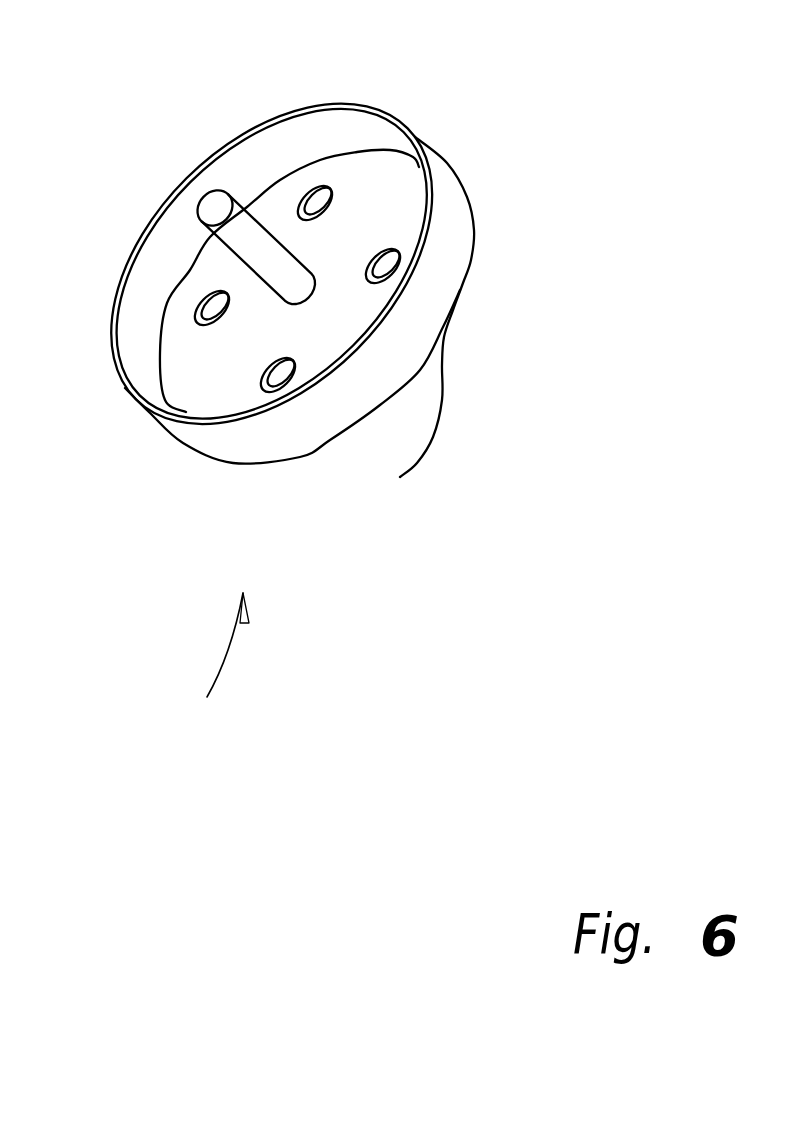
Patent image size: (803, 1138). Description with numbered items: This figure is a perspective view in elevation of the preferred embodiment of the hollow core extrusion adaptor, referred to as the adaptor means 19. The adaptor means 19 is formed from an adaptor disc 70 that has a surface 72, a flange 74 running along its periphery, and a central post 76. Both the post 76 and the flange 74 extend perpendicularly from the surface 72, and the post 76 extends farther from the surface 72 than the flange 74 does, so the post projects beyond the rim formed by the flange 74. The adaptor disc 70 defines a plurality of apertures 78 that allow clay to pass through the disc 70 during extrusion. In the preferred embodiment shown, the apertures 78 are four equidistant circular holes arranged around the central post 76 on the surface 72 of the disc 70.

The adaptor means 19 is at (215, 658).
The adaptor disc 70 is at (466, 283).
The surface 72 is at (358, 167).
The flange 74 is at (402, 122).
The central post 76 is at (203, 193).
The apertures 78 is at (333, 205).